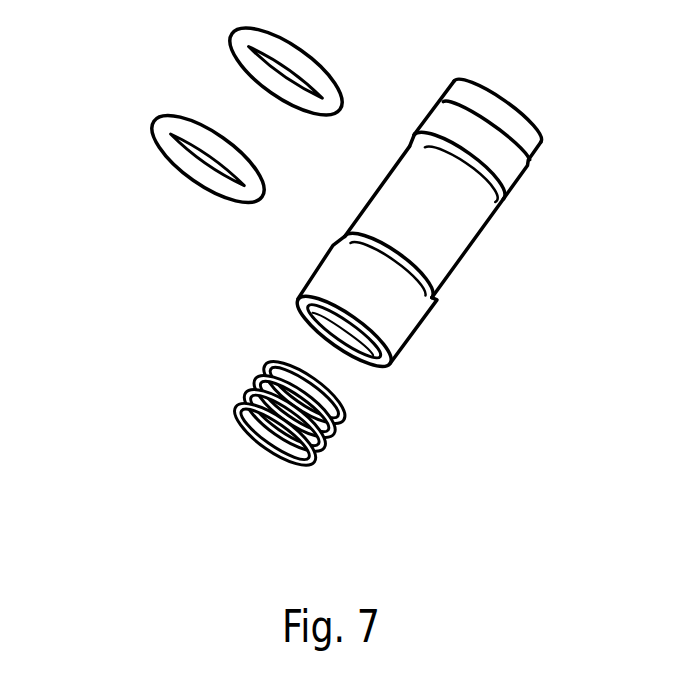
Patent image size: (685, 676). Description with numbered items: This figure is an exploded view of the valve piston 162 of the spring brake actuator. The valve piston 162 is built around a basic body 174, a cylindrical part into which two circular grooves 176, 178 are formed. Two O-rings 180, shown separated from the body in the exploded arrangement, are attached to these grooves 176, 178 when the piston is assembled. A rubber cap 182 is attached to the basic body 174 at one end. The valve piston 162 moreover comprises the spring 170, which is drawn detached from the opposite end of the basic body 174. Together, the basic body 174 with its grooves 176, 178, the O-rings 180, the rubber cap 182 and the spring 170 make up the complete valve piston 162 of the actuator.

The valve piston 162 is at (486, 243).
The spring 170 is at (226, 370).
The basic body 174 is at (493, 245).
The circular groove 176 is at (460, 304).
The circular groove 178 is at (521, 191).
The O-ring 180 is at (209, 47).
The rubber cap 182 is at (523, 129).